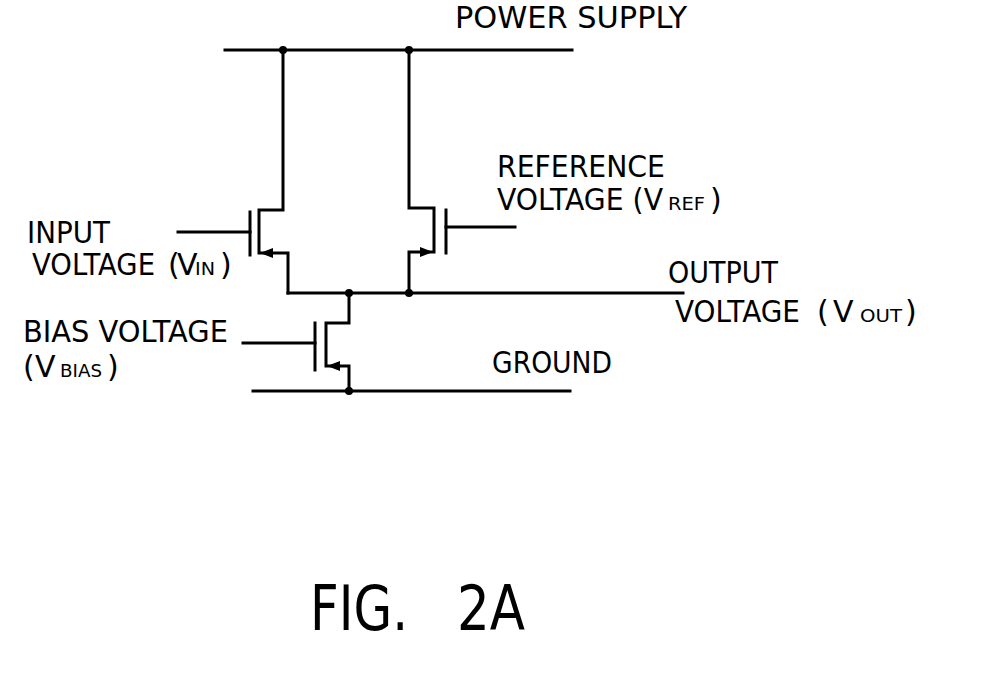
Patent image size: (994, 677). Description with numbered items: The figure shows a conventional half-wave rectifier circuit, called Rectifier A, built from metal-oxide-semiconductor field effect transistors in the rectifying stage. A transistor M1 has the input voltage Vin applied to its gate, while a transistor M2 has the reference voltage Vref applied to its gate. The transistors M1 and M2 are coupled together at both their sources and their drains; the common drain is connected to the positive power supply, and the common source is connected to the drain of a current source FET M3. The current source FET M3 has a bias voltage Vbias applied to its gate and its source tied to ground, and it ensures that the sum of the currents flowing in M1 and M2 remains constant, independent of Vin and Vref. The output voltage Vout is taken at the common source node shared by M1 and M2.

The transistor M1 is at (250, 171).
The transistor M2 is at (445, 171).
The current source FET M3 is at (326, 342).